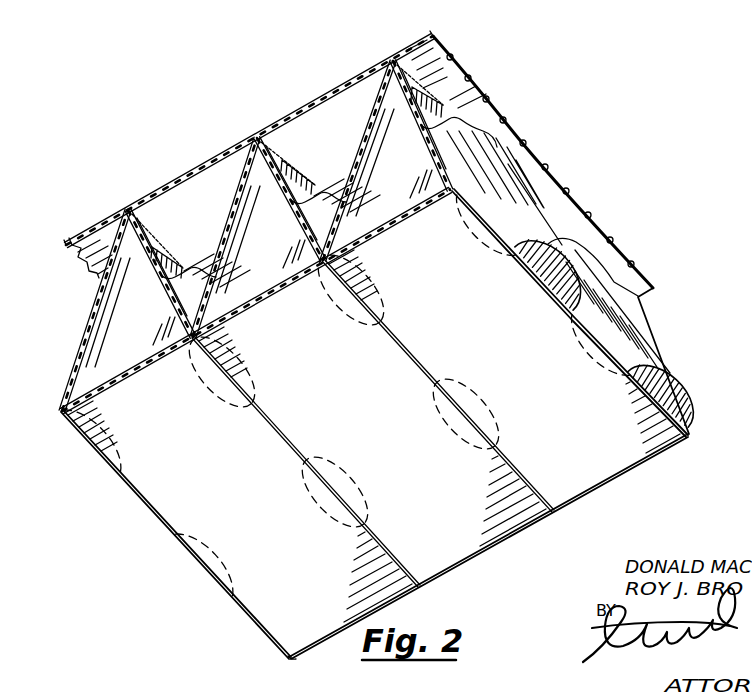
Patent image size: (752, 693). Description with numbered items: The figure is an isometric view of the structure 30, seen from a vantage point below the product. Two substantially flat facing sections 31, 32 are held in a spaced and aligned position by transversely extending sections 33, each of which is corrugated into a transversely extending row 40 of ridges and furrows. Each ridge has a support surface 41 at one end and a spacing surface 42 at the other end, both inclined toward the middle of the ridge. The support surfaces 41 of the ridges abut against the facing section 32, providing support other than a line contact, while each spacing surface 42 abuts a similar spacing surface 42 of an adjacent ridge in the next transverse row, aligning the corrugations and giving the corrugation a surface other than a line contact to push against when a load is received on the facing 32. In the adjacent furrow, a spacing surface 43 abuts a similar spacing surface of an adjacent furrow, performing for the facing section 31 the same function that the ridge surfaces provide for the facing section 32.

The structure 30 is at (225, 138).
The flat section 31 is at (192, 170).
The flat section 32 is at (118, 374).
The transversely extending section 33 is at (88, 306).
The transversely extending row of corrugations 40 is at (490, 162).
The support surface 41 is at (475, 231).
The spacing surface 42 is at (151, 236).
The spacing surface 43 is at (568, 265).